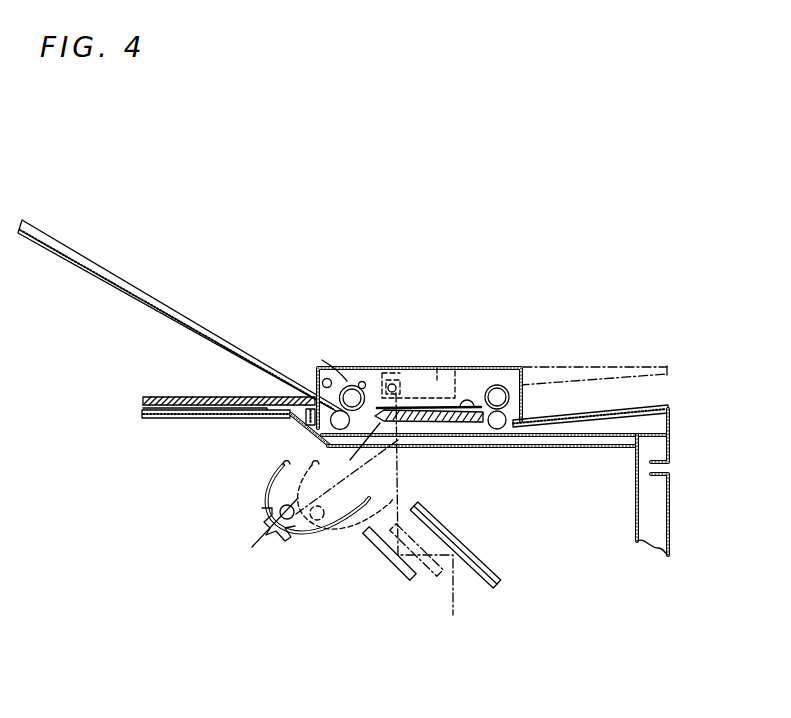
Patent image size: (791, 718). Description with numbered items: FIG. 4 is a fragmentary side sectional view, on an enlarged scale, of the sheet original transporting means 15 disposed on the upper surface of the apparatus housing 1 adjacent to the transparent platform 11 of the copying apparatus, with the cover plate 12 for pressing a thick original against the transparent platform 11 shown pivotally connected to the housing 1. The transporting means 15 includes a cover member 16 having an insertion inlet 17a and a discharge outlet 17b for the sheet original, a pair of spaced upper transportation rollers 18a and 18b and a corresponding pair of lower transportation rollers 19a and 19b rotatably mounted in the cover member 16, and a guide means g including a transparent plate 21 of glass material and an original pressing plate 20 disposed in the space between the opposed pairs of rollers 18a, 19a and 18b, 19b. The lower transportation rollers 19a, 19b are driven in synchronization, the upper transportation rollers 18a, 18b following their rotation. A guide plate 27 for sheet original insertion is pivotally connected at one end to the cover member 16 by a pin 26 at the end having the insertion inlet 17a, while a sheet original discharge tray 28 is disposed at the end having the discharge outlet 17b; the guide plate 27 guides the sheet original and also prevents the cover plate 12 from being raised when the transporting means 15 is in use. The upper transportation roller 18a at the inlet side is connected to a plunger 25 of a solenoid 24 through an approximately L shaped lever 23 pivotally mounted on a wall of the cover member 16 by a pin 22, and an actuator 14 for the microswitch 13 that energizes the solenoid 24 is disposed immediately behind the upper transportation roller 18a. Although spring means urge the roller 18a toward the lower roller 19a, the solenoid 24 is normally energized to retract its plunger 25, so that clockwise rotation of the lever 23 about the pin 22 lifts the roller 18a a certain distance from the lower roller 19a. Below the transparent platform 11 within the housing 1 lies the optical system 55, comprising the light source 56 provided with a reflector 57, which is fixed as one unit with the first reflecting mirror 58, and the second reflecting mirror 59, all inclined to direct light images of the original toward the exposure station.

The apparatus housing 1 is at (677, 528).
The transparent platform 11 is at (173, 420).
The cover plate 12 is at (167, 397).
The microswitch 13 is at (362, 381).
The actuator 14 is at (392, 384).
The sheet original transporting means 15 is at (457, 347).
The cover member 16 is at (500, 366).
The insertion inlet 17a is at (322, 360).
The discharge outlet 17b is at (532, 405).
The upper transportation roller 18a is at (345, 385).
The upper transportation roller 18b is at (504, 386).
The lower transportation roller 19a is at (340, 430).
The lower transportation roller 19b is at (503, 432).
The original pressing plate 20 is at (462, 400).
The transparent plate 21 is at (455, 437).
The pin 22 is at (415, 421).
The lever 23 is at (380, 420).
The solenoid 24 is at (455, 366).
The plunger 25 is at (405, 376).
The pin 26 is at (327, 378).
The guide plate 27 is at (90, 273).
The sheet original discharge tray 28 is at (637, 407).
The optical system 55 is at (418, 583).
The light source 56 is at (297, 540).
The reflector 57 is at (283, 470).
The first reflecting mirror 58 is at (387, 555).
The second reflecting mirror 59 is at (477, 587).
The guide means g is at (486, 441).